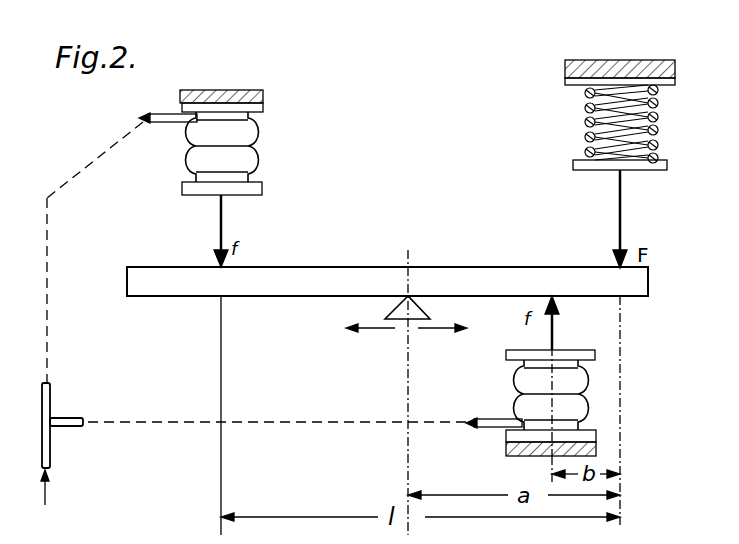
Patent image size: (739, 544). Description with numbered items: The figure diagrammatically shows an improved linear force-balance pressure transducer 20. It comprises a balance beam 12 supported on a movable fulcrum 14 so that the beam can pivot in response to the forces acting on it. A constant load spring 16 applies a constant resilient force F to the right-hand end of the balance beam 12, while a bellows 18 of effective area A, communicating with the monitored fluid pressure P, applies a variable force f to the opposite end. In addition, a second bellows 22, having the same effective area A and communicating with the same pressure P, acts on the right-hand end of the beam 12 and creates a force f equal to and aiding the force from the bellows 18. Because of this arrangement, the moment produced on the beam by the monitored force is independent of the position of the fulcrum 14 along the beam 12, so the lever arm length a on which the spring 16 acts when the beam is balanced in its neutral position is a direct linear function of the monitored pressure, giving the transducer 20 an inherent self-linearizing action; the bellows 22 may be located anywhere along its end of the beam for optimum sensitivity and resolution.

The balance beam 12 is at (161, 282).
The movable fulcrum 14 is at (401, 304).
The constant load spring 16 is at (587, 124).
The bellows 18 is at (257, 138).
The improved transducer 20 is at (132, 241).
The second bellows 22 is at (516, 378).